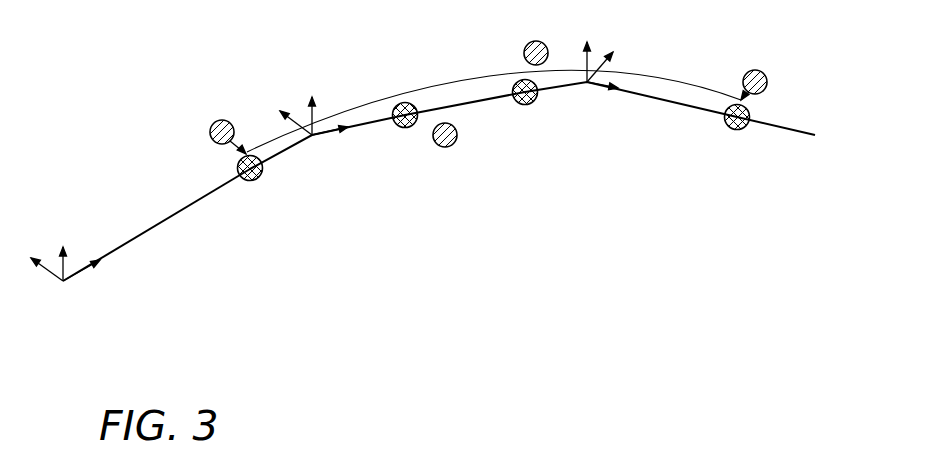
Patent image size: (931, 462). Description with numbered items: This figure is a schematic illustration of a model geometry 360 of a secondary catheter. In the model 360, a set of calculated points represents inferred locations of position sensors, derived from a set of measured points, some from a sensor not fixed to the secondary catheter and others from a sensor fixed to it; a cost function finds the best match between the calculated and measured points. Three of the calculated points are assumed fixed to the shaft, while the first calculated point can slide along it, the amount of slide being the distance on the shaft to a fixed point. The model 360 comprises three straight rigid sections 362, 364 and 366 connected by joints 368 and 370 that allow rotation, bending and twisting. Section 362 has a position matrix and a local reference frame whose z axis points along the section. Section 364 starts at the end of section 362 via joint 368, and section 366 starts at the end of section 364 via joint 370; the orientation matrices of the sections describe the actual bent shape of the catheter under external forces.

The model geometry 360 is at (665, 230).
The straight rigid section 362 is at (170, 228).
The straight rigid section 364 is at (465, 92).
The straight rigid section 366 is at (782, 127).
The joint 368 is at (317, 140).
The joint 370 is at (588, 87).